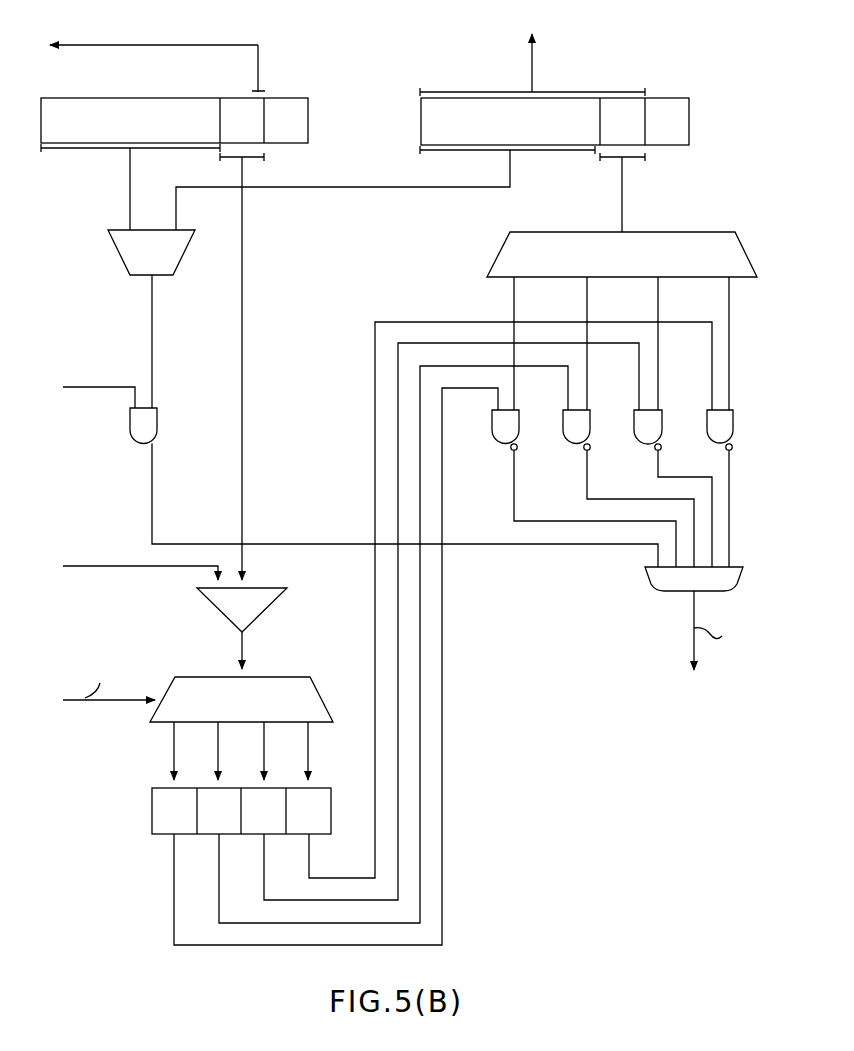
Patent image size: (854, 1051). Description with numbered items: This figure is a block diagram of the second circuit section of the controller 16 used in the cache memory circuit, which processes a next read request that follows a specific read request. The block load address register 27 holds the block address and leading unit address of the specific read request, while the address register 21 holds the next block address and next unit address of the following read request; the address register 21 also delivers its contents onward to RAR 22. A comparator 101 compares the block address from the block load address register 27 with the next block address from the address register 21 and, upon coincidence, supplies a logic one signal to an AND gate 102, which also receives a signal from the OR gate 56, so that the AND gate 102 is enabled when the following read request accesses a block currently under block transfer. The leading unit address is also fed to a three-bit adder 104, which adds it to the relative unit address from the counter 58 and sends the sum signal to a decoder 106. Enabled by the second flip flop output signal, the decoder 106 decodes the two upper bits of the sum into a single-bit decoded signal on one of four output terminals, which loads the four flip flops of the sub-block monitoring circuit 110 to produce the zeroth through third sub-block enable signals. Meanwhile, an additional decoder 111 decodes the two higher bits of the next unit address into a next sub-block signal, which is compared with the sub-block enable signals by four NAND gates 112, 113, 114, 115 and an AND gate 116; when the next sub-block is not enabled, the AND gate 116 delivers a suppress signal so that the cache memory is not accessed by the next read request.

The controller 16 is at (112, 768).
The address register 21 is at (678, 84).
The RAR register 22 is at (538, 50).
The block load address register 27 is at (285, 97).
The OR gate 56 is at (77, 390).
The counter 58 is at (119, 564).
The comparator 101 is at (183, 230).
The AND gate 102 is at (157, 428).
The adder 104 is at (268, 588).
The decoder 106 is at (278, 677).
The sub-block monitoring circuit 110 is at (322, 788).
The additional decoder 111 is at (686, 232).
The NAND gate 112 is at (519, 428).
The NAND gate 113 is at (590, 428).
The NAND gate 114 is at (662, 428).
The NAND gate 115 is at (733, 428).
The AND gate 116 is at (736, 566).